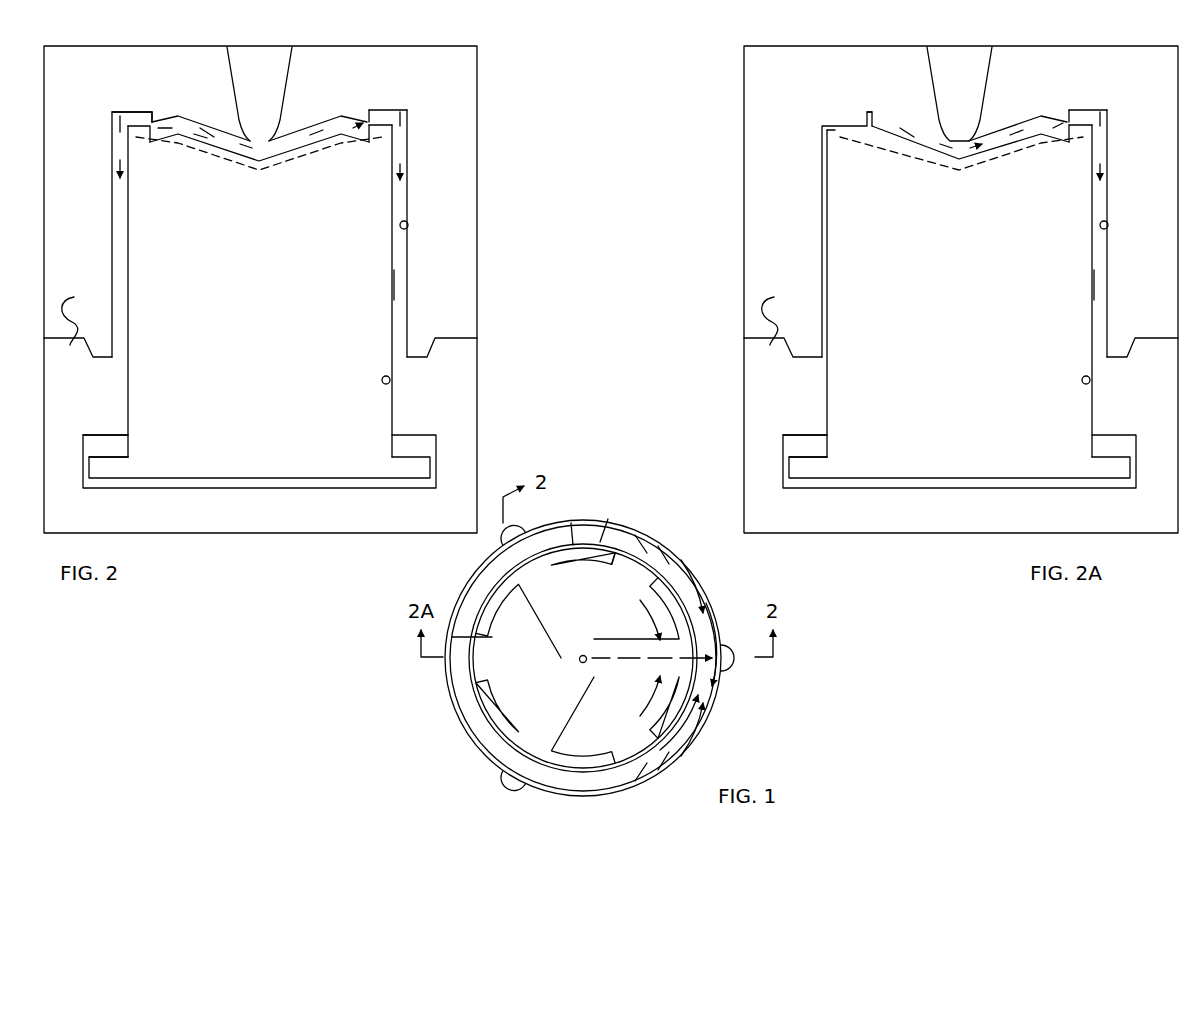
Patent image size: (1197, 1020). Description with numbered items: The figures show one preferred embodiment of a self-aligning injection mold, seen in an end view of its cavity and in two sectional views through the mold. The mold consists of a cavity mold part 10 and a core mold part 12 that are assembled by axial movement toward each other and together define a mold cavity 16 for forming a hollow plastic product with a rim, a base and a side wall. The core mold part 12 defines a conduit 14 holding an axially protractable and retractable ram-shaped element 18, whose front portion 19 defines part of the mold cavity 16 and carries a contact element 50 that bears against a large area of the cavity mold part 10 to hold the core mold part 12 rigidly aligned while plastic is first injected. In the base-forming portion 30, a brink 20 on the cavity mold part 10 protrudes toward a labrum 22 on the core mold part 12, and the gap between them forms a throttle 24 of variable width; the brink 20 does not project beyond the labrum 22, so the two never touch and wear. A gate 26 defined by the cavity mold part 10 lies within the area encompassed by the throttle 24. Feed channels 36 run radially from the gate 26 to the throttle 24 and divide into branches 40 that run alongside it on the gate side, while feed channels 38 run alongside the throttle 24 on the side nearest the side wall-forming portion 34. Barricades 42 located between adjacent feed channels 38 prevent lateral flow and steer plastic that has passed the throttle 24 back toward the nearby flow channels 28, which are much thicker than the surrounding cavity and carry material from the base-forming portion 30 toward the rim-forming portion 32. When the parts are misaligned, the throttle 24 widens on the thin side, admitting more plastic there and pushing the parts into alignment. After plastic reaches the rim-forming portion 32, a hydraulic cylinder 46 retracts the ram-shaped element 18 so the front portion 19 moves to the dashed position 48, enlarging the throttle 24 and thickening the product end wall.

In FIG. 2, the cavity mold part 10 is at (44, 193).
In FIG. 2A, the cavity mold part 10 is at (744, 193).
In FIG. 2, the core mold part 12 is at (142, 302).
In FIG. 2A, the core mold part 12 is at (847, 302).
In FIG. 2, the conduit 14 is at (390, 380).
In FIG. 2A, the conduit 14 is at (1090, 380).
In FIG. 2, the mold cavity 16 is at (408, 225).
In FIG. 2A, the mold cavity 16 is at (1108, 225).
In FIG. 1, the mold cavity 16 is at (702, 735).
In FIG. 2, the ram-shaped element 18 is at (392, 288).
In FIG. 2A, the ram-shaped element 18 is at (1092, 288).
In FIG. 2, the front portion 19 is at (296, 130).
In FIG. 2A, the front portion 19 is at (996, 130).
In FIG. 2, the brink 20 is at (152, 122).
In FIG. 2A, the brink 20 is at (1067, 121).
In FIG. 1, the brink 20 is at (590, 548).
In FIG. 2, the labrum 22 is at (144, 130).
In FIG. 2A, the labrum 22 is at (1083, 128).
In FIG. 1, the labrum 22 is at (600, 542).
In FIG. 2, the throttle 24 is at (150, 120).
In FIG. 2A, the throttle 24 is at (1064, 127).
In FIG. 1, the throttle 24 is at (575, 542).
In FIG. 2, the gate 26 is at (262, 137).
In FIG. 2A, the gate 26 is at (962, 137).
In FIG. 1, the gate 26 is at (580, 657).
In FIG. 2, the flow channels 28 is at (113, 212).
In FIG. 2A, the flow channels 28 is at (1105, 202).
In FIG. 1, the flow channels 28 is at (736, 664).
In FIG. 2, the base-forming portion 30 is at (330, 119).
In FIG. 2A, the base-forming portion 30 is at (1030, 119).
In FIG. 1, the base-forming portion 30 is at (470, 749).
In FIG. 2, the rim-forming portion 32 is at (127, 356).
In FIG. 2A, the rim-forming portion 32 is at (827, 356).
In FIG. 2A, the side wall-forming portion 34 is at (822, 212).
In FIG. 1, the side wall-forming portion 34 is at (472, 576).
In FIG. 2, the feed channels 36 is at (223, 141).
In FIG. 2A, the feed channels 36 is at (912, 138).
In FIG. 1, the feed channels 36 is at (646, 640).
In FIG. 2, the feed channels 38 is at (397, 112).
In FIG. 2A, the feed channels 38 is at (1097, 112).
In FIG. 1, the feed channels 38 is at (687, 572).
In FIG. 1, the branches 40 is at (661, 592).
In FIG. 2A, the barricades 42 is at (843, 135).
In FIG. 1, the barricades 42 is at (653, 548).
In FIG. 2, the hydraulic cylinder 46 is at (87, 443).
In FIG. 2A, the hydraulic cylinder 46 is at (787, 443).
In FIG. 2, the position 48 is at (238, 160).
In FIG. 2A, the position 48 is at (938, 160).
In FIG. 2, the contact element 50 is at (212, 138).
In FIG. 2A, the contact element 50 is at (907, 132).